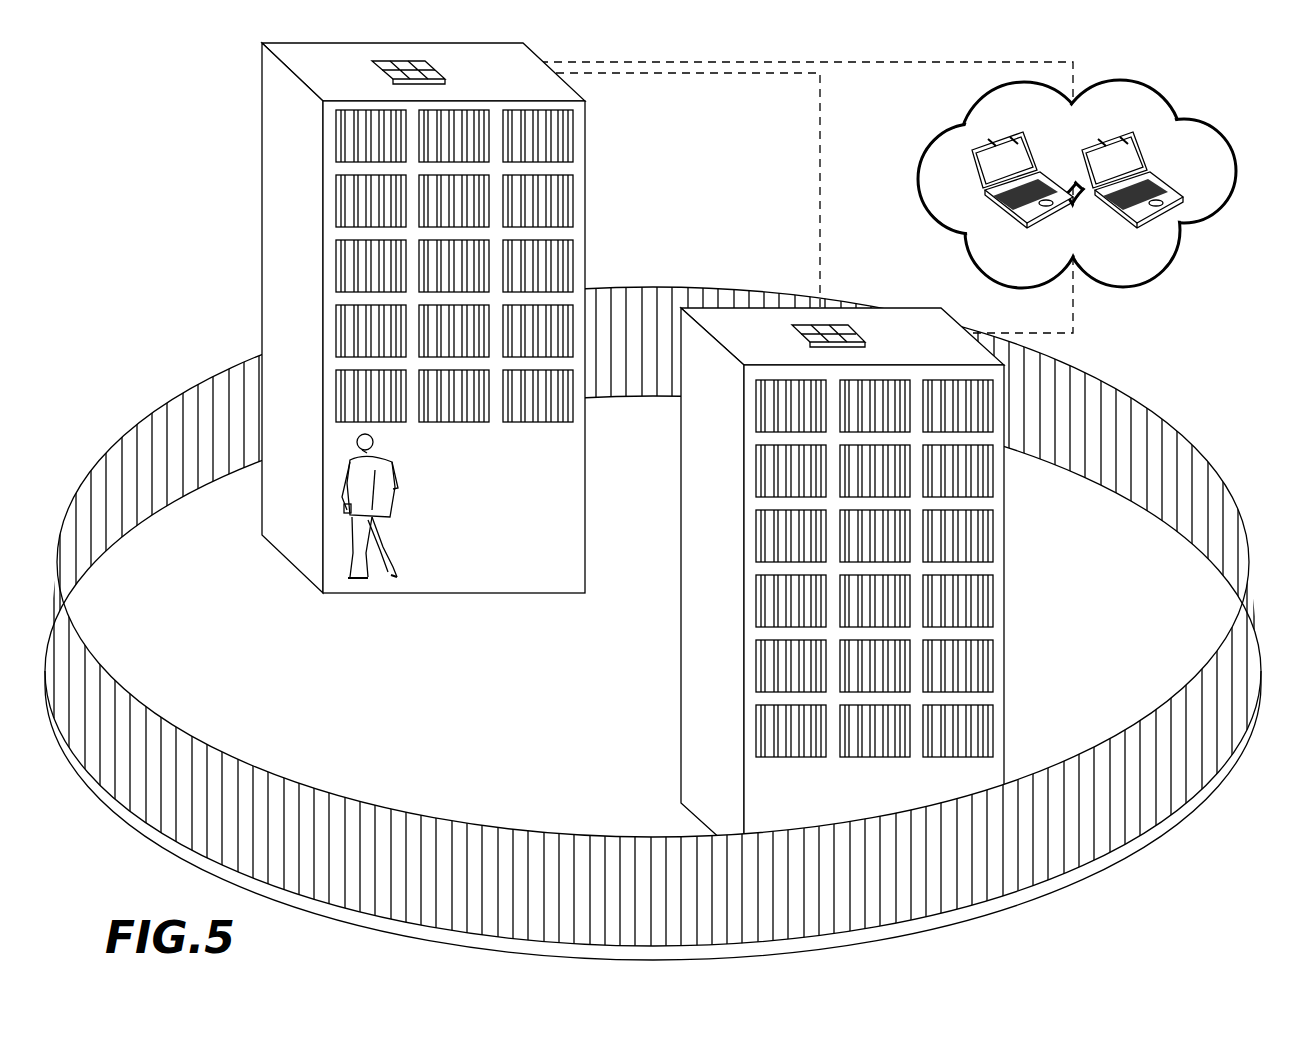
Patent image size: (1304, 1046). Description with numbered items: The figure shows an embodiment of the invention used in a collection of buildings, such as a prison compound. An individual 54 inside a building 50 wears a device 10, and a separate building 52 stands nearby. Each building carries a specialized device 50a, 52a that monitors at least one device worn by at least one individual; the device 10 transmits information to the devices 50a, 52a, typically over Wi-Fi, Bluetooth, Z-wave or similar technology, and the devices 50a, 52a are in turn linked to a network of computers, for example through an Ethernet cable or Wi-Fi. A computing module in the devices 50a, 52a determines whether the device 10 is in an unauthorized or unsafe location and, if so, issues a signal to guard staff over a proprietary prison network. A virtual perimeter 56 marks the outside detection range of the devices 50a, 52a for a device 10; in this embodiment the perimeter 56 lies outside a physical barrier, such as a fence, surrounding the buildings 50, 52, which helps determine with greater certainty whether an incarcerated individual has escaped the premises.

The device 10 is at (341, 487).
The building 50 is at (523, 593).
The specialized device 50a is at (372, 62).
The separate building 52 is at (681, 737).
The specialized device 52a is at (792, 333).
The individual 54 is at (390, 549).
The virtual perimeter 56 is at (1077, 880).